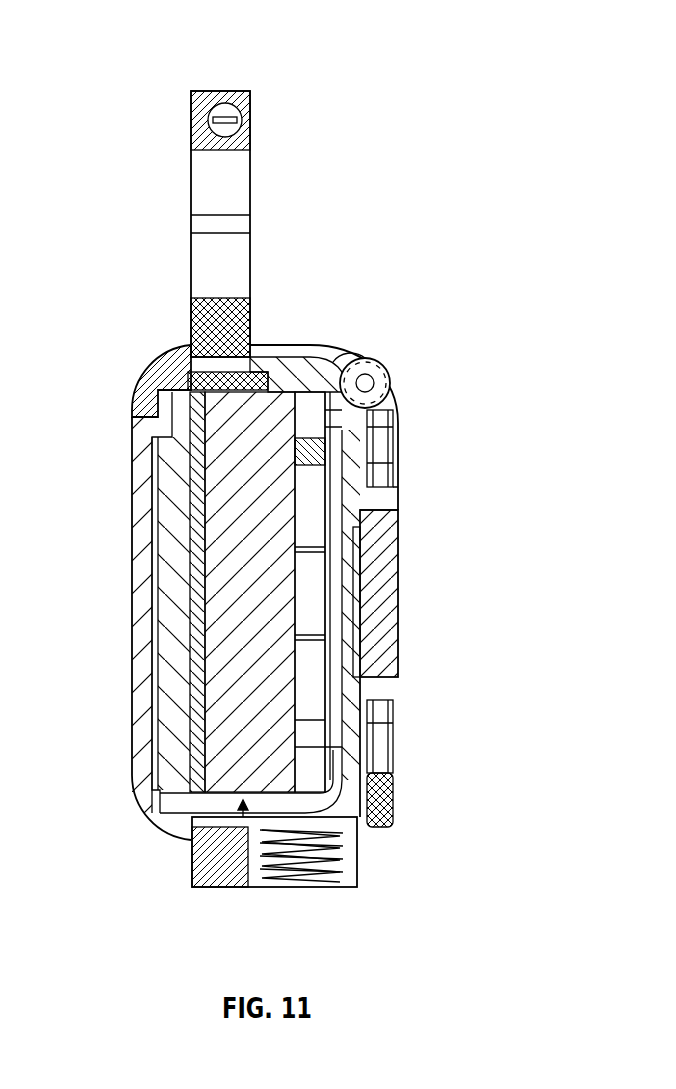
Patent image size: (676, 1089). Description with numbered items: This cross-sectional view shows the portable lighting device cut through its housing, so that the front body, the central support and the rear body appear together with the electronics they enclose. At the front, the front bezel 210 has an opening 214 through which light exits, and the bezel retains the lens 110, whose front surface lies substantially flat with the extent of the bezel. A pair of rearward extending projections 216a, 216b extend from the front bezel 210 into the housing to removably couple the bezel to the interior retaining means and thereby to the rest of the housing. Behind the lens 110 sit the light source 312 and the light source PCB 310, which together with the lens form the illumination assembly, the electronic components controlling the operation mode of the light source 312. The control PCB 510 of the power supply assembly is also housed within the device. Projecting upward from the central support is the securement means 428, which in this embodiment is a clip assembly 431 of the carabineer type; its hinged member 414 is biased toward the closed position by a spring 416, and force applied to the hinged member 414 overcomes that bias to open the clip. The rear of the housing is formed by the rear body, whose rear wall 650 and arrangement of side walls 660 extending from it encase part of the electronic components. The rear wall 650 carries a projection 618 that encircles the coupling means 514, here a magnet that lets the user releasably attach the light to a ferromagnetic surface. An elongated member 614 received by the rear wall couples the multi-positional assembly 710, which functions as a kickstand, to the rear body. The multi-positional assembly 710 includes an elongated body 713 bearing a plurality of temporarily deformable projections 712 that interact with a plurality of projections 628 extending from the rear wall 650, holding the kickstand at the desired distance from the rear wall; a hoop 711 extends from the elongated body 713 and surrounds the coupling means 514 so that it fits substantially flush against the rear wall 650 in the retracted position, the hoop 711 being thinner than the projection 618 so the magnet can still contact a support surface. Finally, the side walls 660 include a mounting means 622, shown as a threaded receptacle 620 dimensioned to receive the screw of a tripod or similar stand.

The securement means 428 is at (177, 50).
The clip assembly 431 is at (220, 592).
The spring 416 is at (228, 91).
The hinged member 414 is at (247, 120).
The rearward extending projection 216a is at (188, 350).
The front bezel 210 is at (157, 360).
The opening 214 is at (133, 492).
The control PCB 510 is at (277, 348).
The side walls 660 is at (317, 408).
The projections 712 is at (372, 360).
The elongated body 713 is at (380, 448).
The projections 628 is at (353, 360).
The elongated member 614 is at (365, 383).
The projection 618 is at (400, 503).
The coupling means 514 is at (398, 610).
The multi-positional assembly 710 is at (395, 737).
The hoop 711 is at (380, 763).
The rear wall 650 is at (348, 749).
The mounting means 622 is at (360, 853).
The receptacle 620 is at (323, 887).
The rearward extending projection 216b is at (197, 887).
The light source 312 is at (178, 607).
The lens 110 is at (140, 627).
The light source PCB 310 is at (198, 707).